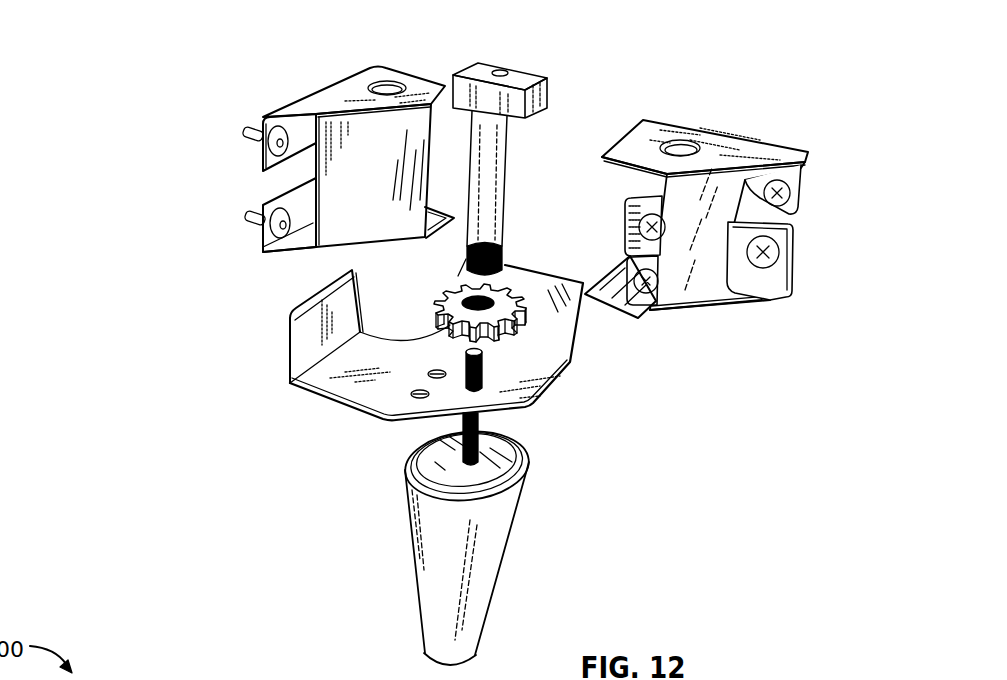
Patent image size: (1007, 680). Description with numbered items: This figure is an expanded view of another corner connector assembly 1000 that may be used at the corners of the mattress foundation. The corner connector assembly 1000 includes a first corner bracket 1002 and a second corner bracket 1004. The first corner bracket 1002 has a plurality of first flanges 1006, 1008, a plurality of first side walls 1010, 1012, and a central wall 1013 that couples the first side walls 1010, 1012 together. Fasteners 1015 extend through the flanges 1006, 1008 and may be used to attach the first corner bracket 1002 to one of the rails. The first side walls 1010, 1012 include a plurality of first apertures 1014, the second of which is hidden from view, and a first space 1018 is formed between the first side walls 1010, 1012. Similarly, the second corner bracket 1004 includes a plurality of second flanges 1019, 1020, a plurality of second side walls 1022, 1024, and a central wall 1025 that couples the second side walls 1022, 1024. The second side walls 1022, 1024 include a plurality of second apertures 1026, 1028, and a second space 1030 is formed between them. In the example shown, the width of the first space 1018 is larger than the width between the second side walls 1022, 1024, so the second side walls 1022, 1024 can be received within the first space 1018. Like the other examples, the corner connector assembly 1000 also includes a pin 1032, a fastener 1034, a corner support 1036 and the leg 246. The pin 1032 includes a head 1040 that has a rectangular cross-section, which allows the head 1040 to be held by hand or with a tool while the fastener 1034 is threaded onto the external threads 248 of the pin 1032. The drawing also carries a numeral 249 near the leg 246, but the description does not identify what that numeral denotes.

The corner connector assembly 1000 is at (143, 30).
The first corner bracket 1002 is at (314, 170).
The second corner bracket 1004 is at (709, 216).
The first flange 1006 is at (263, 125).
The first flange 1008 is at (263, 248).
The first side wall 1010 is at (265, 260).
The first side wall 1012 is at (354, 67).
The central wall 1013 is at (340, 157).
The first aperture 1014 is at (388, 82).
The fastener 1015 is at (250, 215).
The first space 1018 is at (433, 213).
The second flange 1019 is at (790, 197).
The second flange 1020 is at (780, 280).
The second side wall 1022 is at (613, 295).
The second side wall 1024 is at (705, 116).
The central wall 1025 is at (730, 300).
The second aperture 1026 is at (680, 140).
The second aperture 1028 is at (643, 278).
The second space 1030 is at (617, 163).
The pin 1032 is at (495, 147).
The fastener 1034 is at (455, 293).
The corner support 1036 is at (295, 350).
The head 1040 is at (528, 77).
The leg 246 is at (487, 588).
The external threads 248 is at (497, 243).
The leg screw 249 is at (410, 437).